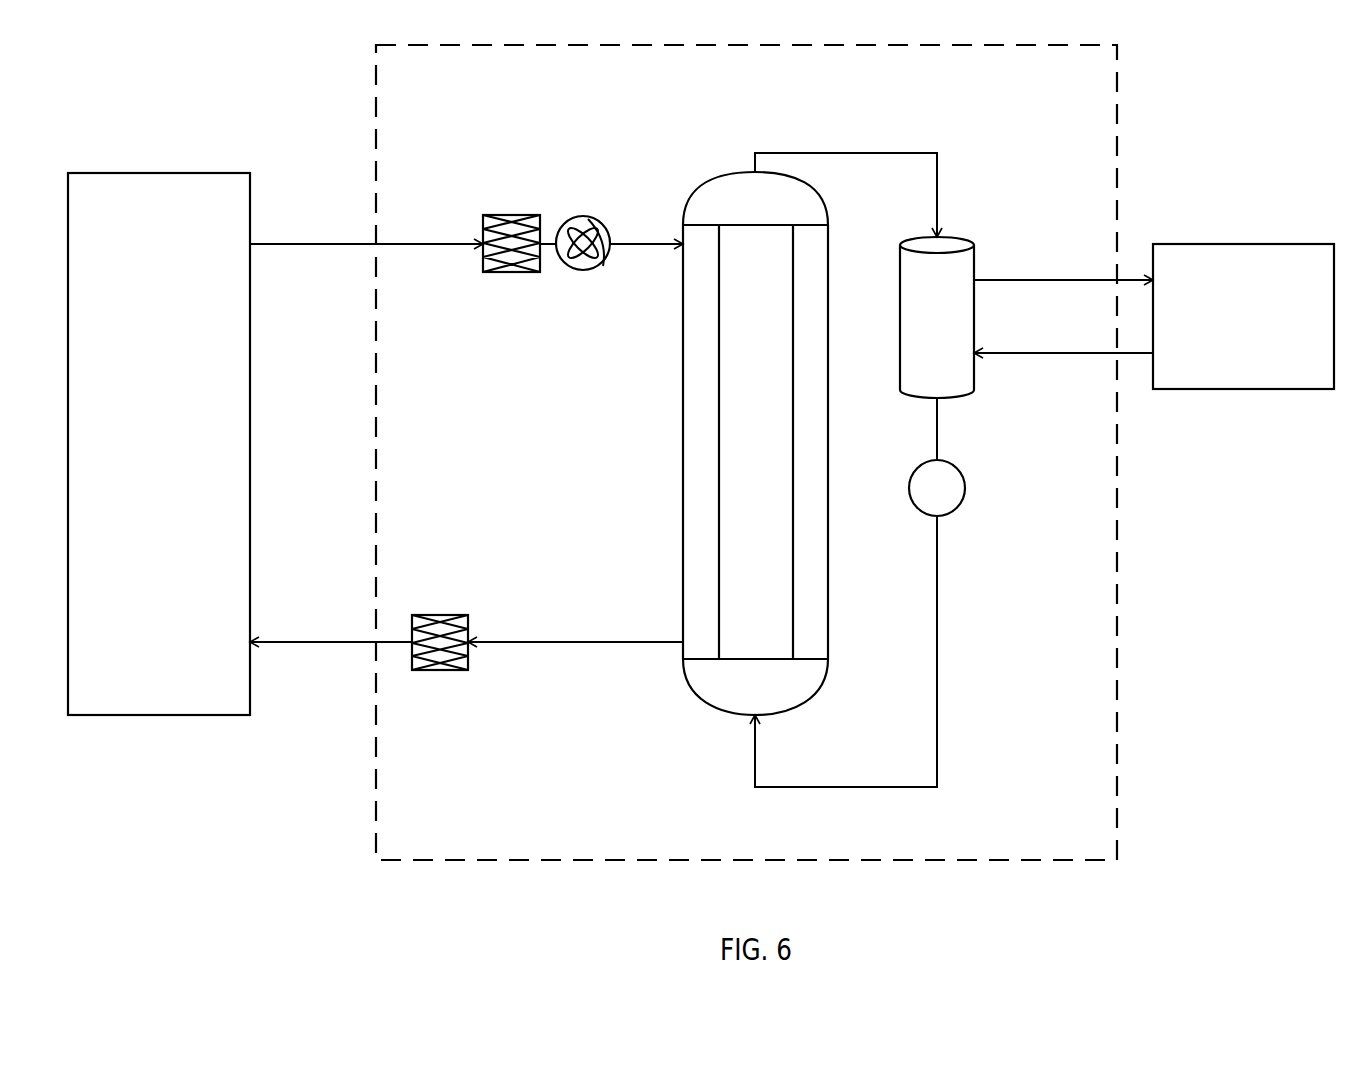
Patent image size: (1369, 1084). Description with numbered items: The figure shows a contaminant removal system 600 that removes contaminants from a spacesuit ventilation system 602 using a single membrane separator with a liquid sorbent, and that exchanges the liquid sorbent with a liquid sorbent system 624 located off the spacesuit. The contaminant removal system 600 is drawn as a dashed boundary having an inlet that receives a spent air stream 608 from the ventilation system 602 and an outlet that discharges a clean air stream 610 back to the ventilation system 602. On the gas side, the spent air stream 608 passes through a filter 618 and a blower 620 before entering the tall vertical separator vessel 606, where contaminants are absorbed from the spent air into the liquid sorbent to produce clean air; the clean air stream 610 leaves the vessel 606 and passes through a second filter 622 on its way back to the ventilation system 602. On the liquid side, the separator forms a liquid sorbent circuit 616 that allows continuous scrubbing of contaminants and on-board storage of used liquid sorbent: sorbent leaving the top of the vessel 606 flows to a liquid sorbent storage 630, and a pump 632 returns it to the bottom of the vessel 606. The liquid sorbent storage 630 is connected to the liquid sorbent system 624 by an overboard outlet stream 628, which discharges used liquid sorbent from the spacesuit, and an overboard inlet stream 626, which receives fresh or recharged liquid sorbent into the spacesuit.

The contaminant removal system 600 is at (1109, 105).
The ventilation system 602 is at (143, 481).
The sorbent bed vessel 606 is at (772, 452).
The spent air stream 608 is at (285, 243).
The clean air stream 610 is at (285, 641).
The liquid sorbent circuit 616 is at (965, 129).
The filter 618 is at (492, 215).
The blower 620 is at (585, 218).
The filter 622 is at (422, 615).
The liquid sorbent system 624 is at (1227, 372).
The overboard inlet stream 626 is at (1008, 352).
The overboard outlet stream 628 is at (1008, 279).
The liquid sorbent storage 630 is at (953, 326).
The pump 632 is at (953, 498).